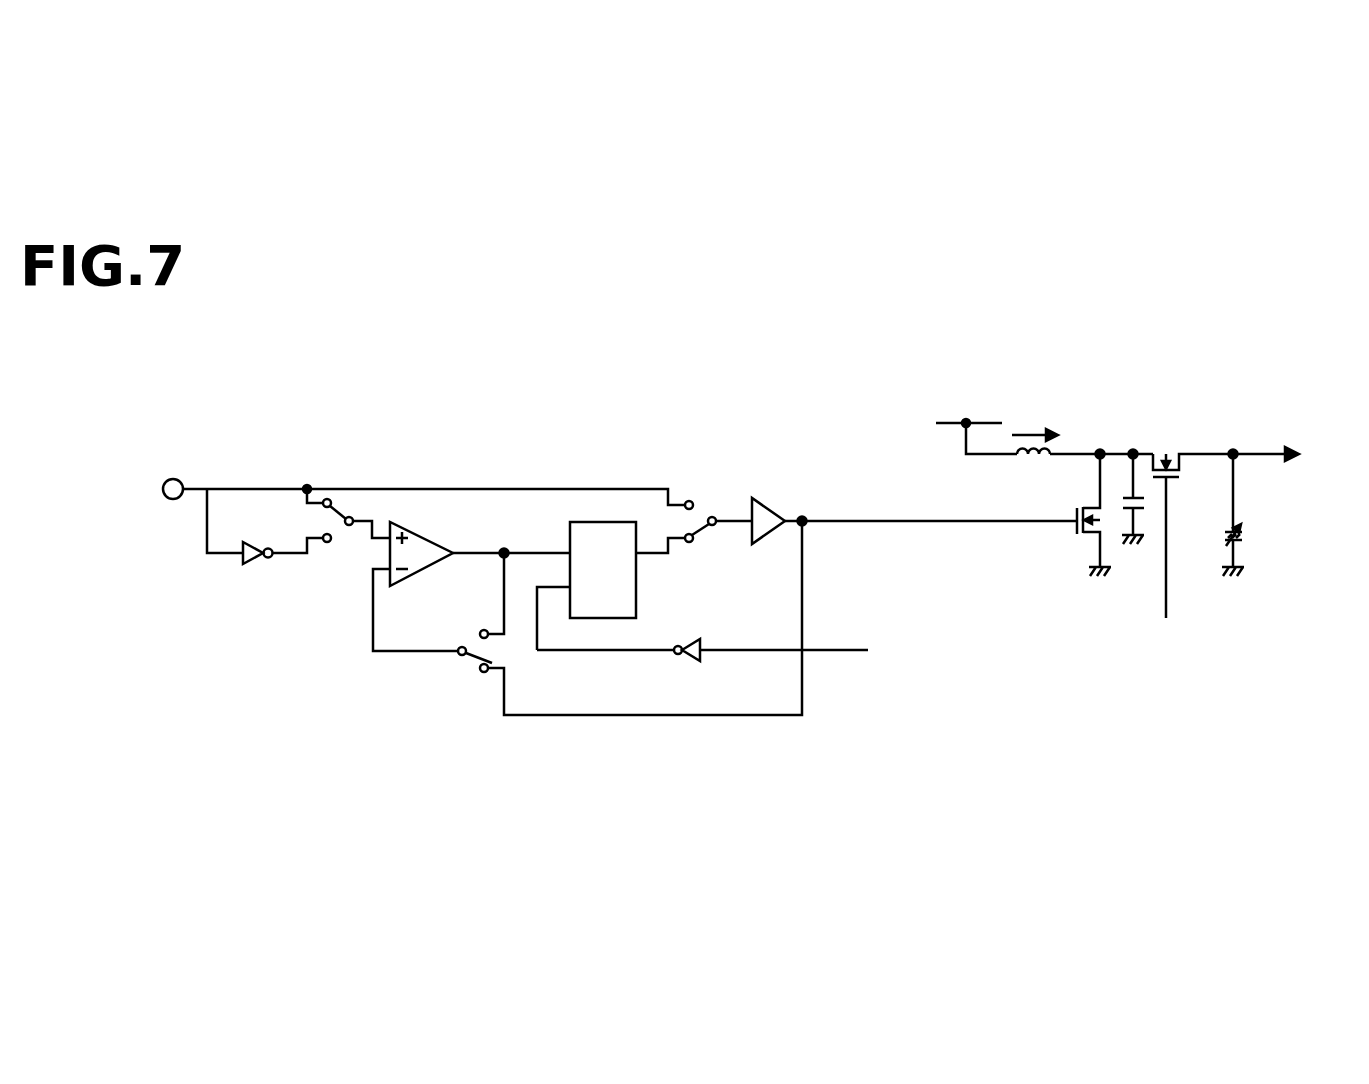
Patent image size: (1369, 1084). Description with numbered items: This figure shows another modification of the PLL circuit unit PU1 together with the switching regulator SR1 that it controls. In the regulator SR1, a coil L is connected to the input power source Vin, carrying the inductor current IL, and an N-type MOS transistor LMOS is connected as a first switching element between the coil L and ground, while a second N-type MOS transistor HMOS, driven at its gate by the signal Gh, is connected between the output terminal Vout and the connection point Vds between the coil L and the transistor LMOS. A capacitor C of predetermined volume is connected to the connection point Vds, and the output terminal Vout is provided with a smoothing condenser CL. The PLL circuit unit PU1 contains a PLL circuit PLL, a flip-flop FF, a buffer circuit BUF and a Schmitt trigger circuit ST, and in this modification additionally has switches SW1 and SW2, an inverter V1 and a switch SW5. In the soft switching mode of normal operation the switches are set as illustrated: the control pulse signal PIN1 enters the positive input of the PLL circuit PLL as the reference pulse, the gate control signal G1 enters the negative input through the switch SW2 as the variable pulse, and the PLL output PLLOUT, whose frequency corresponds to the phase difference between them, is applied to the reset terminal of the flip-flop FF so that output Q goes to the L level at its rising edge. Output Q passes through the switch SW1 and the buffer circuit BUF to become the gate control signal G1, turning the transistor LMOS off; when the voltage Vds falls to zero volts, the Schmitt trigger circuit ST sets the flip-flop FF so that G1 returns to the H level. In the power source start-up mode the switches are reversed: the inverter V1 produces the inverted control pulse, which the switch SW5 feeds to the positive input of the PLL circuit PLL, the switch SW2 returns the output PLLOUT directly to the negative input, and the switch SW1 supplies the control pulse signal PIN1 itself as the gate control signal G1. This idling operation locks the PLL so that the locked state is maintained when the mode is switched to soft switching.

The PLL circuit unit PU1 is at (549, 388).
The switching regulator SR1 is at (1160, 340).
The control pulse signal PIN1 is at (214, 479).
The inverter V1 is at (283, 579).
The switch SW5 is at (348, 538).
The PLL circuit PLL is at (471, 586).
The PLL output PLLOUT is at (489, 548).
The switch SW2 is at (471, 675).
The flip-flop FF is at (606, 570).
The switch SW1 is at (714, 544).
The buffer circuit BUF is at (776, 503).
The gate control signal G1 is at (931, 507).
The Schmitt trigger circuit ST is at (702, 643).
The connection point voltage Vds is at (981, 557).
The input power source Vin is at (976, 425).
The inductor current IL is at (1036, 418).
The coil L is at (1039, 468).
The N-type MOS transistor LMOS is at (1044, 515).
The capacitor C is at (1143, 497).
The N-type MOS transistor HMOS is at (1190, 445).
The high-side gate signal Gh is at (1160, 564).
The output terminal Vout is at (1294, 444).
The smoothing condenser CL is at (1264, 515).